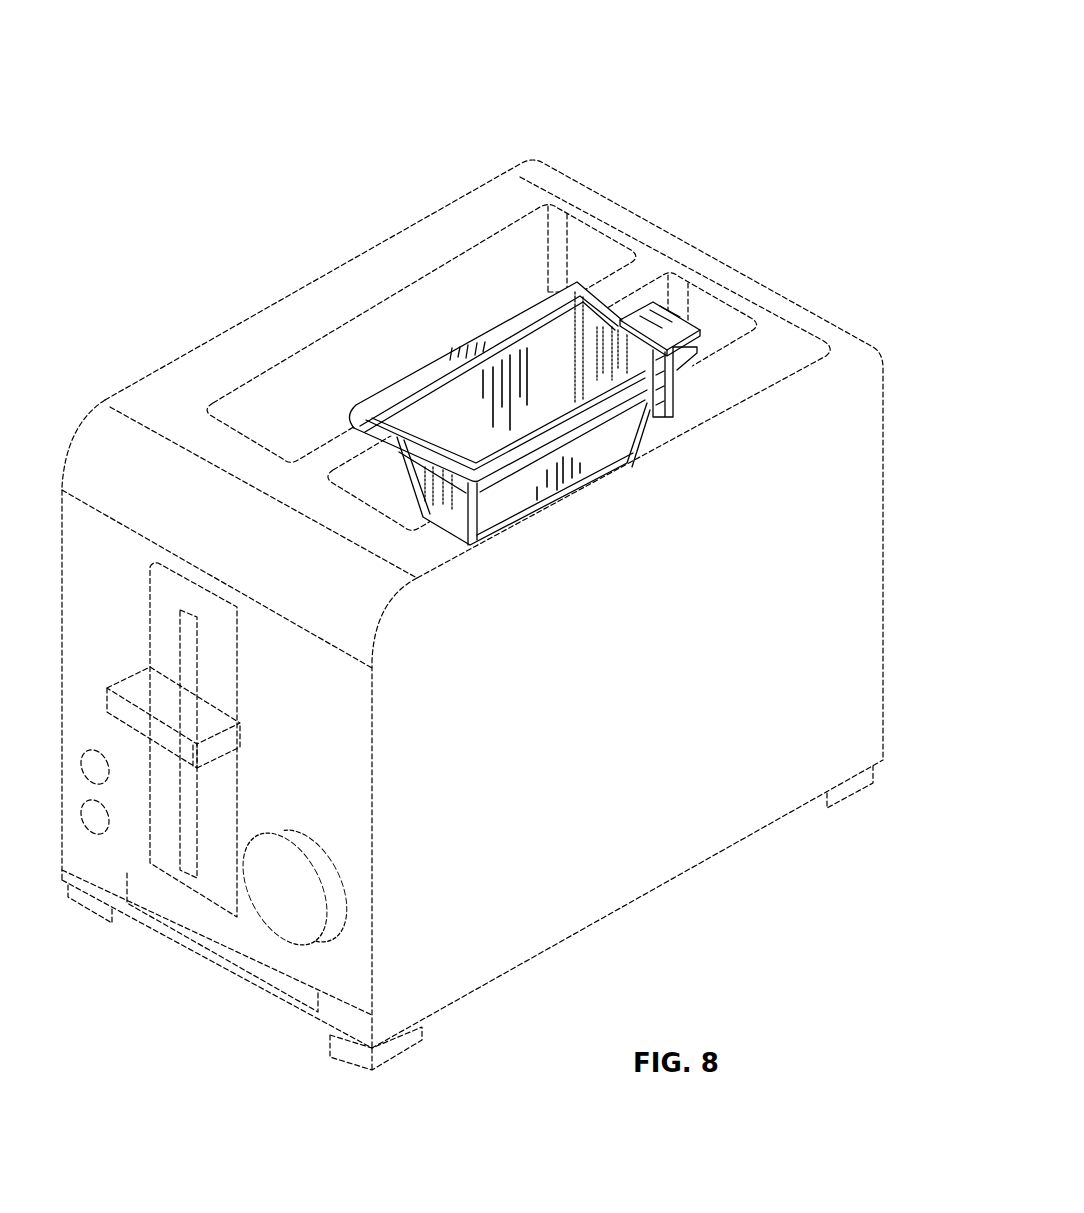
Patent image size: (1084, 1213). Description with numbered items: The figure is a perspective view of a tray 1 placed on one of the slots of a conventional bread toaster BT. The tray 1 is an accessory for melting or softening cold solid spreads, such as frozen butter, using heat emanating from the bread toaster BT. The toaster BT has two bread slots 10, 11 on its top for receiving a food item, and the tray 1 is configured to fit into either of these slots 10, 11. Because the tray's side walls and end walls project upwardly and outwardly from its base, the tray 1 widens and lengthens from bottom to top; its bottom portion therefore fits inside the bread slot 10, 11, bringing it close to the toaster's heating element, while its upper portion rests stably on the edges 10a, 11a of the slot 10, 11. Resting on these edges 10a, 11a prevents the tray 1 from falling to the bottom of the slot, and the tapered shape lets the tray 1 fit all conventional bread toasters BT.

The tray 1 is at (468, 400).
The slot 10 is at (458, 312).
The edge of bread slot 10a is at (503, 232).
The slot 11 is at (709, 322).
The edge of bread slot 11a is at (743, 310).
The bread toaster BT is at (787, 592).